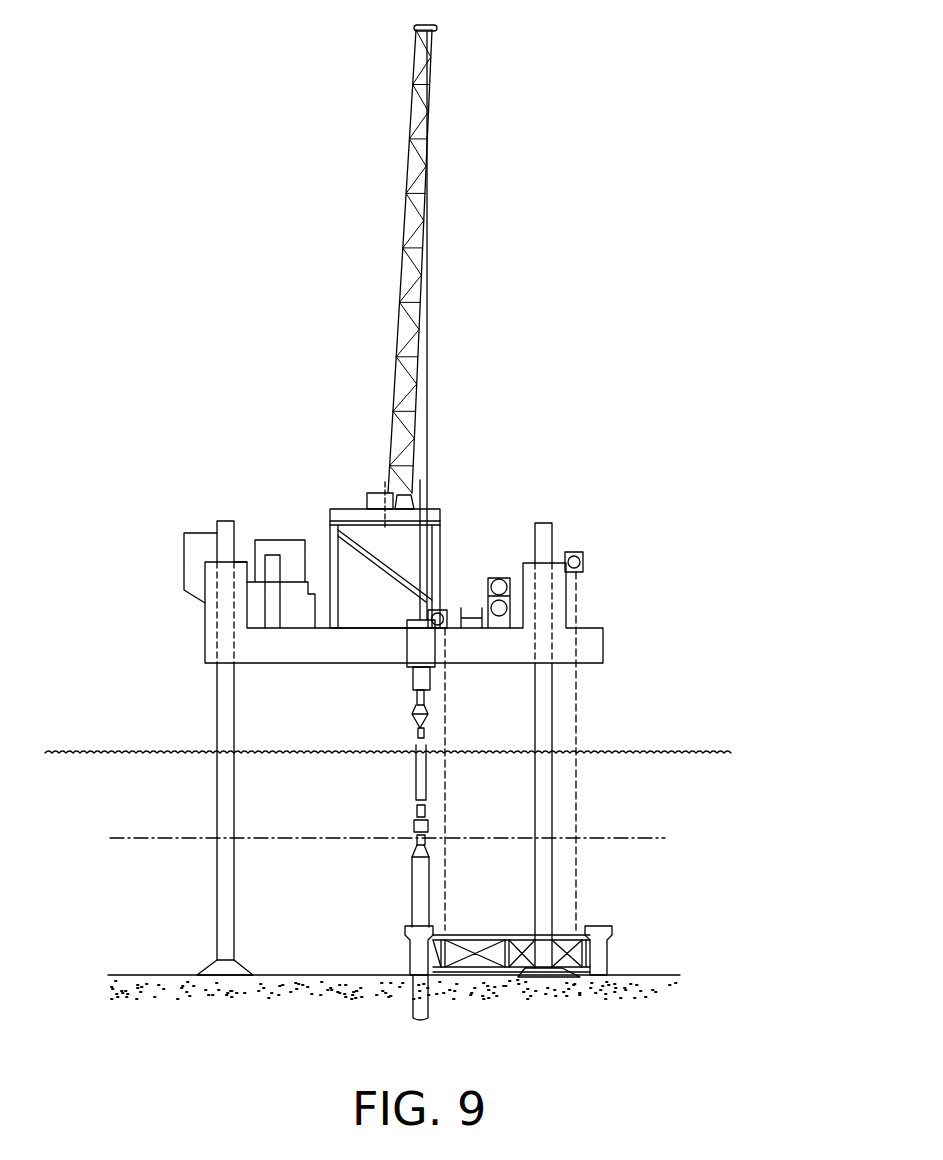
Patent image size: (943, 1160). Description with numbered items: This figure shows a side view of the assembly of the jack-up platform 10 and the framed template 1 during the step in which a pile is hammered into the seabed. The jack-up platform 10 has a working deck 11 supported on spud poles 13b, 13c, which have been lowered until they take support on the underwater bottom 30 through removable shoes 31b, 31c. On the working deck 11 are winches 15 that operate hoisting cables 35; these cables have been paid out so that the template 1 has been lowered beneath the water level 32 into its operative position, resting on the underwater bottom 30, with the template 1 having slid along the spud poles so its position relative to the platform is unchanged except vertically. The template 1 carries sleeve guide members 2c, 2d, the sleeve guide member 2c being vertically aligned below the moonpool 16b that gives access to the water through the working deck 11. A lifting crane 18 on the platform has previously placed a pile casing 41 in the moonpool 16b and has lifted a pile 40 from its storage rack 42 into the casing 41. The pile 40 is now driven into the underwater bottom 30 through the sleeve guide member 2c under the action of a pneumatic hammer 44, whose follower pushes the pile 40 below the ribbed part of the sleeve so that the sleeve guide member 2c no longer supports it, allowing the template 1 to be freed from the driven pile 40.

The template 1 is at (514, 962).
The sleeve guide member 2c is at (407, 948).
The sleeve guide member 2d is at (610, 948).
The jack-up platform 10 is at (362, 612).
The working deck 11 is at (312, 652).
The spud pole 13b is at (545, 712).
The spud pole 13c is at (218, 700).
The winch 15 is at (440, 614).
The moonpool 16b is at (407, 640).
The lifting crane 18 is at (450, 245).
The underwater bottom 30 is at (325, 1026).
The removable shoe 31b is at (541, 980).
The removable shoe 31c is at (210, 968).
The water level 32 is at (60, 750).
The hoisting cable 35 is at (447, 822).
The pile 40 is at (411, 890).
The pile casing 41 is at (413, 684).
The storage rack 42 is at (500, 575).
The pneumatic hammer 44 is at (411, 823).